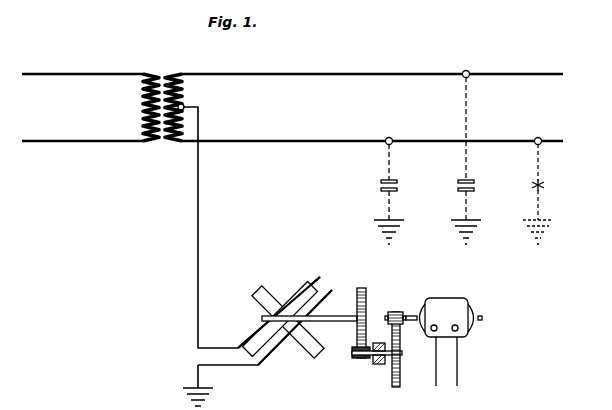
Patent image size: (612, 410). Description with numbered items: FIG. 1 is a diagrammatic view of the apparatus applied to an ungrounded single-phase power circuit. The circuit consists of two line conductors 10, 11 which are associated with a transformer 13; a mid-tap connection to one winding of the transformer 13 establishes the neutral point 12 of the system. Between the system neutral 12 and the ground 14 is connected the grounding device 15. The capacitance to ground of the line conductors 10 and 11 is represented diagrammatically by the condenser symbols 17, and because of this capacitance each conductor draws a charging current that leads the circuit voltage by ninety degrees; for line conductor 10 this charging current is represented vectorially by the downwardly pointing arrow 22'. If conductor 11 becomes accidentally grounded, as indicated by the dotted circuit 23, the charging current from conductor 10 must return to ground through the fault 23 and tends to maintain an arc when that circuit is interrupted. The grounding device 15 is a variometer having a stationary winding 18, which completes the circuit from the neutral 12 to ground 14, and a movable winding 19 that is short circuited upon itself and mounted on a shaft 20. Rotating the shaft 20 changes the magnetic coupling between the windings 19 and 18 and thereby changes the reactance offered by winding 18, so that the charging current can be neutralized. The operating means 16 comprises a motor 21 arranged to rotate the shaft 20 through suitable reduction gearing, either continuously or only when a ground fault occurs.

The line conductor 10 is at (300, 77).
The line conductor 11 is at (305, 140).
The neutral point 12 is at (185, 106).
The transformer 13 is at (167, 165).
The ground 14 is at (196, 388).
The grounding device 15 is at (269, 320).
The operating means 16 is at (410, 291).
The condenser symbols 17 is at (457, 183).
The stationary winding 18 is at (314, 279).
The movable winding 19 is at (314, 349).
The shaft 20 is at (346, 313).
The motor 21 is at (450, 298).
The arrow 22' is at (506, 181).
The grounding circuit 23 is at (545, 186).